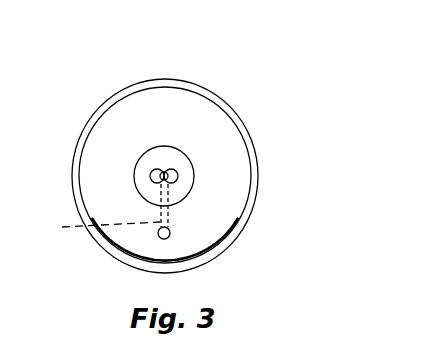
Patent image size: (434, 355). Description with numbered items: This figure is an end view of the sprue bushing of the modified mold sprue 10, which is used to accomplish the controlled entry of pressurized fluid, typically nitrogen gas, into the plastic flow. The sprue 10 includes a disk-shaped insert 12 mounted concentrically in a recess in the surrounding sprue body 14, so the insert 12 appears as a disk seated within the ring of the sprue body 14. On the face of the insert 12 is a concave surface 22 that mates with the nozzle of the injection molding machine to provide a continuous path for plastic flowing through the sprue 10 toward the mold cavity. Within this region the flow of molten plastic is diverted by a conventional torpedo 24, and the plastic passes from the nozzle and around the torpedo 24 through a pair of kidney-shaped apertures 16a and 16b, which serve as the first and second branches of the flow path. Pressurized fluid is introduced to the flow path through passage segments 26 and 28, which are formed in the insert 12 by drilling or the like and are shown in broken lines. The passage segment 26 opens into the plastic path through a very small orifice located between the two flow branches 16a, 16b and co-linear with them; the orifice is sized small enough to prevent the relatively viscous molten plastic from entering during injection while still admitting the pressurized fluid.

The mold sprue 10 is at (115, 57).
The insert 12 is at (112, 103).
The sprue body 14 is at (92, 115).
The kidney-shaped aperture 16a is at (151, 176).
The kidney-shaped aperture 16b is at (177, 177).
The concave surface 22 is at (178, 179).
The torpedo 24 is at (167, 182).
The passage segment 26 is at (95, 226).
The passage segment 28 is at (170, 233).